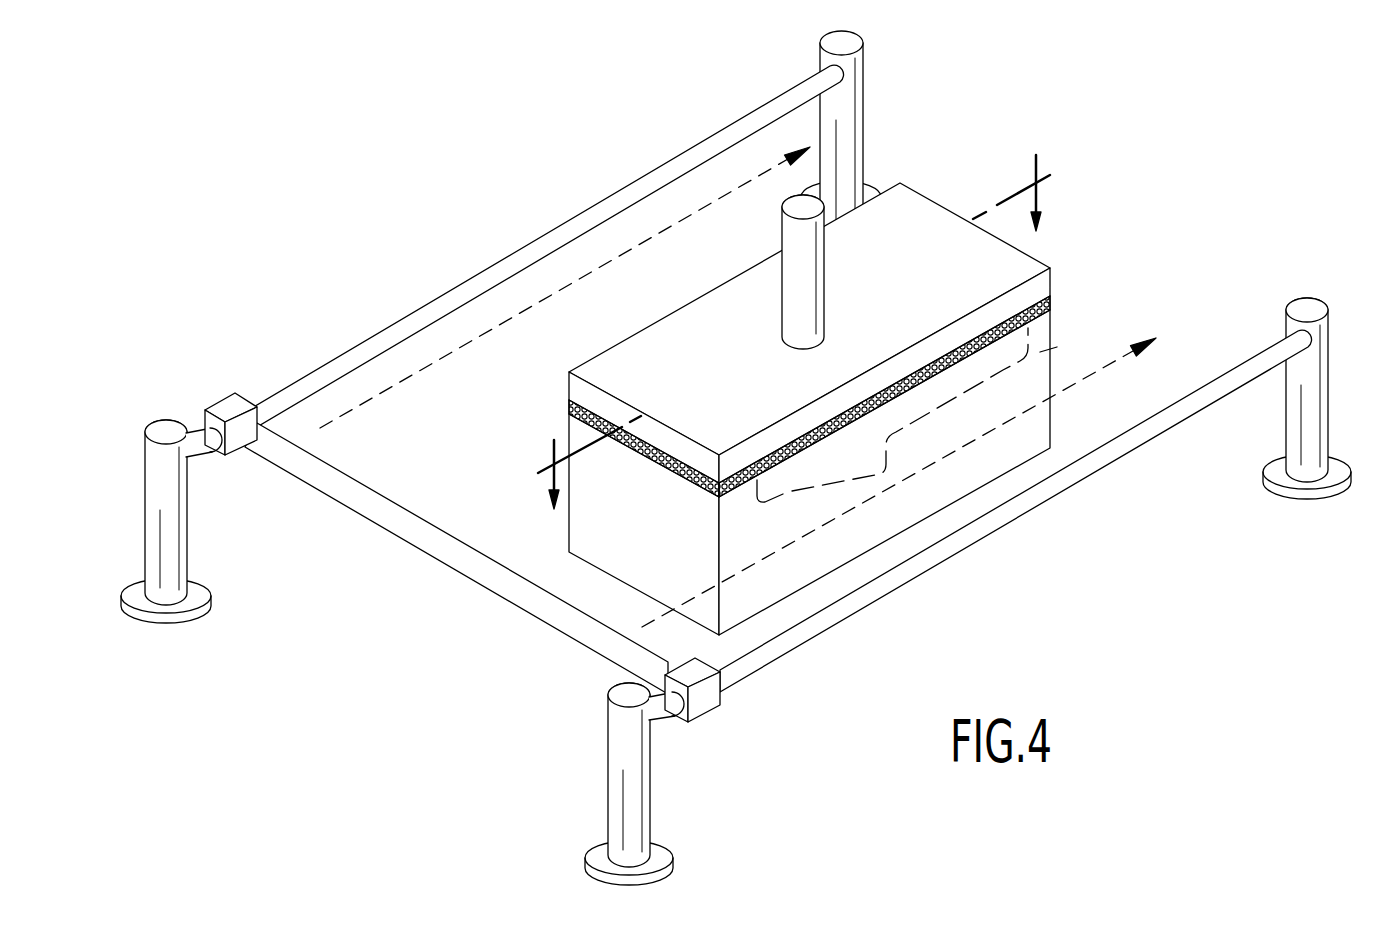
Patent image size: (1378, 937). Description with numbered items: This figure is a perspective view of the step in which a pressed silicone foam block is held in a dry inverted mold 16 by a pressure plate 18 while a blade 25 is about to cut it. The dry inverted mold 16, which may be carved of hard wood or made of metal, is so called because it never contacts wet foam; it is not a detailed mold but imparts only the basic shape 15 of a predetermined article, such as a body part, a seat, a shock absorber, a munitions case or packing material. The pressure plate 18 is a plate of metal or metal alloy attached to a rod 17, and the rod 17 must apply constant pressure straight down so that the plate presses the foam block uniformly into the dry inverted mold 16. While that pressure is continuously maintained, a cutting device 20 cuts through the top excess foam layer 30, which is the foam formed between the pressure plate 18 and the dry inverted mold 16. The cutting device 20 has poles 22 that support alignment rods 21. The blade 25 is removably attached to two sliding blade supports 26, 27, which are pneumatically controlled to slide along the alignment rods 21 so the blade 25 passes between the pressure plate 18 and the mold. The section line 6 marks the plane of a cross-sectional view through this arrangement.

The section line 6- 6 is at (790, 333).
The basic shape 15 is at (1060, 344).
The dry inverted mold 16 is at (1050, 418).
The rod 17 is at (780, 295).
The pressure plate 18 is at (911, 186).
The cutting device 20 is at (188, 522).
The alignment rods 21 is at (555, 227).
The poles 22 is at (602, 790).
The blade 25 is at (488, 585).
The sliding blade support 26 is at (217, 397).
The sliding blade support 27 is at (703, 712).
The top excess foam layer 30 is at (570, 415).